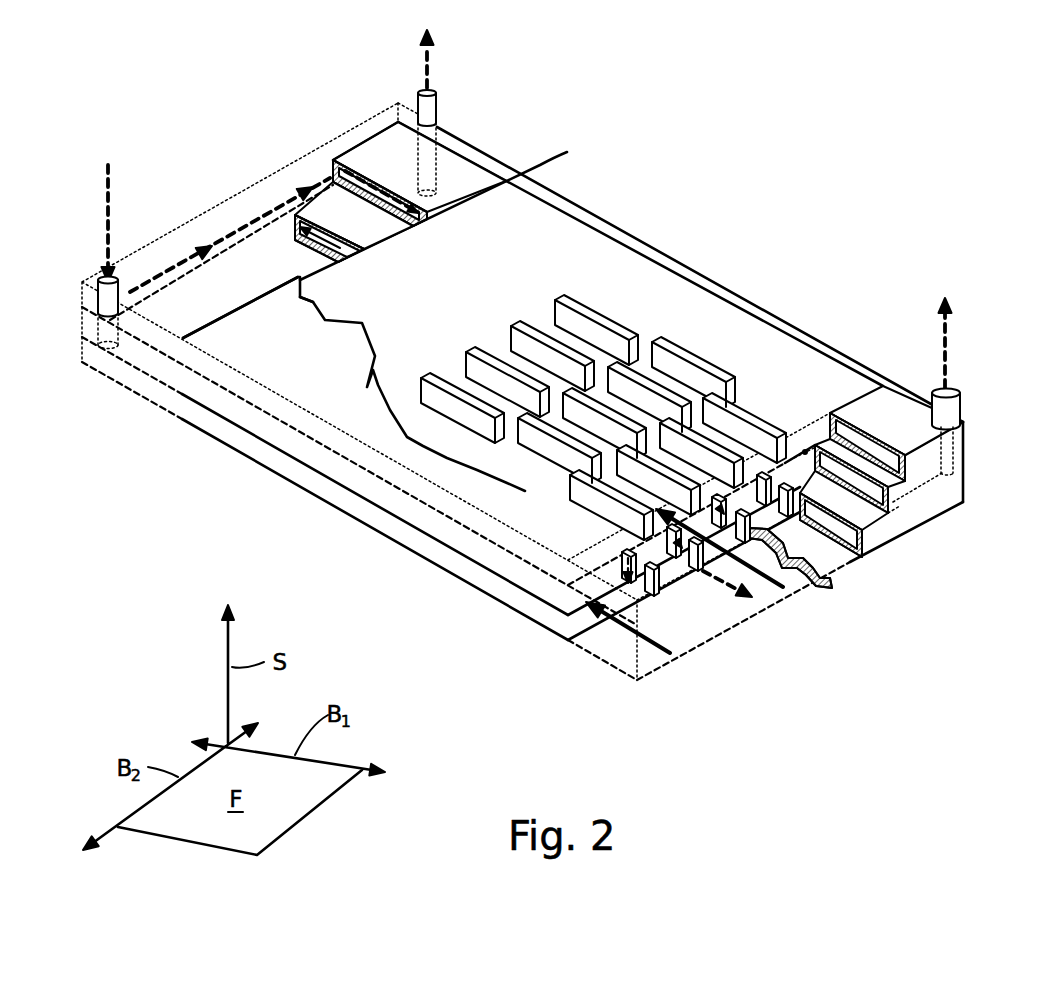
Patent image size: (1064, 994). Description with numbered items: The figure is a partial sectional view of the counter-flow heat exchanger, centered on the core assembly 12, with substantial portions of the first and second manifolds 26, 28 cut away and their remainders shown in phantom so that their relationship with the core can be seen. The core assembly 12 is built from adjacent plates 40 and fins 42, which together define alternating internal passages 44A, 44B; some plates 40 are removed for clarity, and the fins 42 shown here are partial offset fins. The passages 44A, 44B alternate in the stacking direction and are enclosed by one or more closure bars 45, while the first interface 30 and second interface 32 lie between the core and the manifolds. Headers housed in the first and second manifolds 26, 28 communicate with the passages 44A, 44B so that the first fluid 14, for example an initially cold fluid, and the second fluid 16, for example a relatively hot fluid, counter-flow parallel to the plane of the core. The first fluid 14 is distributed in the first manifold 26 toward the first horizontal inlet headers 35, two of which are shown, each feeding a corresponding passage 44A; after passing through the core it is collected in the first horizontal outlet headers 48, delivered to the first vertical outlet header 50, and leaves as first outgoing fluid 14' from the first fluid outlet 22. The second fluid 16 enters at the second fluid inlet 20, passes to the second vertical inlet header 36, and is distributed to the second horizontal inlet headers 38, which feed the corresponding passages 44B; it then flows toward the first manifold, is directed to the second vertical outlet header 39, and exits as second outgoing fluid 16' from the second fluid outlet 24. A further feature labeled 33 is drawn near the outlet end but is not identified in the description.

The core assembly 12 is at (736, 274).
The first incoming fluid 14 is at (565, 480).
The first outgoing fluid 14' is at (457, 59).
The second incoming fluid 16 is at (485, 379).
The second outgoing fluid 16' is at (911, 343).
The second fluid inlet 20 is at (100, 300).
The first fluid outlet 22 is at (432, 108).
The second fluid outlet 24 is at (957, 388).
The first manifold 26 is at (968, 430).
The second manifold 28 is at (485, 145).
The first interface 30 is at (619, 547).
The second interface 32 is at (267, 318).
The internal passages 33 is at (895, 503).
The first horizontal inlet headers 35 is at (867, 548).
The second vertical inlet header 36 is at (107, 328).
The second horizontal inlet headers 38 is at (448, 201).
The second vertical outlet header 39 is at (947, 457).
The plates 40 is at (336, 373).
The fins 42 is at (527, 455).
The first internal passages 44A is at (585, 531).
The second internal passages 44B is at (640, 600).
The closure bars 45 is at (340, 465).
The first horizontal outlet headers 48 is at (295, 240).
The first vertical outlet header 50 is at (430, 168).